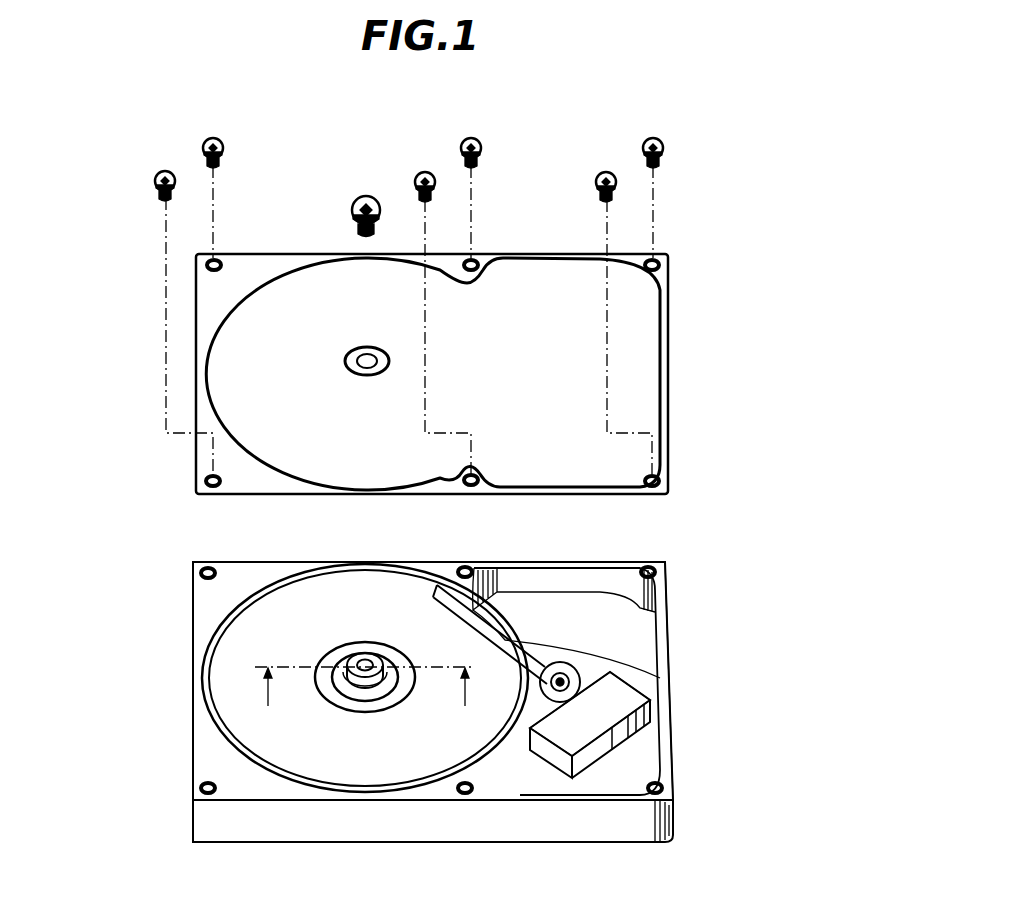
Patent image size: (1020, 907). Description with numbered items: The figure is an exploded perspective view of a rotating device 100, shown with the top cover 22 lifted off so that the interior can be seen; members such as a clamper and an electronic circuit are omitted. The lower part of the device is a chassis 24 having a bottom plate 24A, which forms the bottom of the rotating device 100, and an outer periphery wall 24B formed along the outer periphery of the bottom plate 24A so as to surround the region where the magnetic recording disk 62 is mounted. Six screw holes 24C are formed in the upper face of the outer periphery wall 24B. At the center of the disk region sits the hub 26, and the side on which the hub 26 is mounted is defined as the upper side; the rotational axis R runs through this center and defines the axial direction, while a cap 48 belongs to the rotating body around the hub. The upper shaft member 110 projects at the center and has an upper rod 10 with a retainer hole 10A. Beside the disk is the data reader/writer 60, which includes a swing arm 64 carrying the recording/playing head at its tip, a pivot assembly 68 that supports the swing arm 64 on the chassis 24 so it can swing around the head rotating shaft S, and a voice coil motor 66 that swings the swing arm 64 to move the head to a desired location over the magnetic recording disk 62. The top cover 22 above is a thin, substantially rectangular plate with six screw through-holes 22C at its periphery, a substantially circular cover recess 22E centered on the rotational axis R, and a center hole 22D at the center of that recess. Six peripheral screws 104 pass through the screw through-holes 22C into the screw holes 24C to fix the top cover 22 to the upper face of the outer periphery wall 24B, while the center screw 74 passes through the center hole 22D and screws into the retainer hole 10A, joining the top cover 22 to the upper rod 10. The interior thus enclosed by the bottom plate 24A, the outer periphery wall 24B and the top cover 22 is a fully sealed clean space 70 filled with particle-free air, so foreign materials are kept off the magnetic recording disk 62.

The rotating device 100 is at (443, 707).
The upper rod 10 is at (377, 690).
The retainer hole 10A is at (360, 660).
The upper shaft member 110 is at (378, 662).
The top cover 22 is at (643, 327).
The screw through-holes 22C is at (220, 262).
The center hole 22D is at (374, 366).
The cover recess 22E is at (355, 370).
The chassis 24 is at (553, 812).
The bottom plate 24A is at (610, 642).
The outer periphery wall 24B is at (662, 633).
The screw holes 24C is at (199, 575).
The hub 26 is at (326, 692).
The cap 48 is at (338, 667).
The data reader/writer 60 is at (718, 660).
The magnetic recording disk 62 is at (272, 620).
The swing arm 64 is at (580, 681).
The voice coil motor 66 is at (600, 718).
The pivot assembly 68 is at (652, 706).
The clean space 70 is at (545, 615).
The center screw 74 is at (352, 206).
The peripheral screws 104 is at (156, 179).
The rotational axis R is at (365, 658).
The head rotating shaft S is at (543, 698).